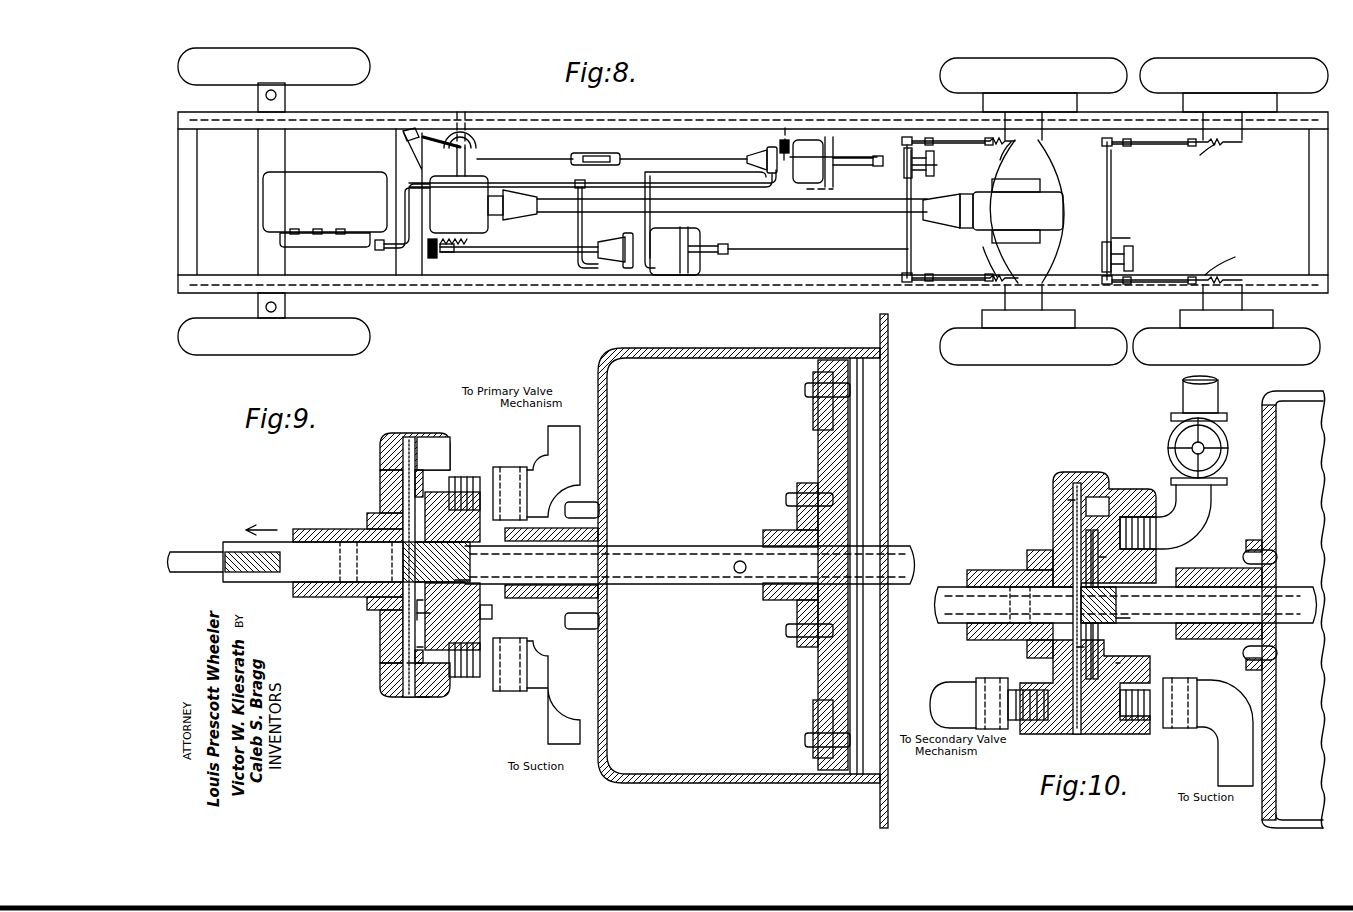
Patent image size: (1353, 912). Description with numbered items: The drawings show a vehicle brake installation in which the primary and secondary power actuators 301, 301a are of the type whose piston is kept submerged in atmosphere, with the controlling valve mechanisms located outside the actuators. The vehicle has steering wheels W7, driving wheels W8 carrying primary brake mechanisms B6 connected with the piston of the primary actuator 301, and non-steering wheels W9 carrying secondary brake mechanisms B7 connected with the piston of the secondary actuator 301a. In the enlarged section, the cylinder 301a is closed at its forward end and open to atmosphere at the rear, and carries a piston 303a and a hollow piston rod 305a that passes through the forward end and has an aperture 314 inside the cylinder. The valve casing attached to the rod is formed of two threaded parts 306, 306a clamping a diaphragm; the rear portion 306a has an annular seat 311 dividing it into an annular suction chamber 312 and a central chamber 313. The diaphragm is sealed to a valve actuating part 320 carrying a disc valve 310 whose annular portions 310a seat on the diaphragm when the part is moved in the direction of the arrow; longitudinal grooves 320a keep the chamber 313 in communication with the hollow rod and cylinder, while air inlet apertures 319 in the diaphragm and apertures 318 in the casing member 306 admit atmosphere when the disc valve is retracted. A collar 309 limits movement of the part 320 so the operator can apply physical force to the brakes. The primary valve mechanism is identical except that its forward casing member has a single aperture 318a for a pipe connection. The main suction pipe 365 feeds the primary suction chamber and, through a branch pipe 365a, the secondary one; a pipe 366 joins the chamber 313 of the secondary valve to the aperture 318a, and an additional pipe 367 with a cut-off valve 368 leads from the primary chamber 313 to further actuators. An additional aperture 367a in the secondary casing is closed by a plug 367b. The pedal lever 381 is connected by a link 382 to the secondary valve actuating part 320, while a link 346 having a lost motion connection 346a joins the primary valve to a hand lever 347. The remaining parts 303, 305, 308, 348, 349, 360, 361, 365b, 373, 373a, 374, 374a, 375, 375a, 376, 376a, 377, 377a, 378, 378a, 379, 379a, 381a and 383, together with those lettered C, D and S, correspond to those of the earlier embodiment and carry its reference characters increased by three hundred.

In FIG. 8, the primary power actuator 301 is at (806, 140).
In FIG. 10, the primary power actuator 301 is at (1286, 410).
In FIG. 8, the secondary power actuator 301a is at (671, 266).
In FIG. 9, the secondary power actuator 301a is at (742, 351).
In FIG. 8, the end plate 303 is at (834, 187).
In FIG. 9, the piston 303a is at (823, 459).
In FIG. 8, the piston rod 305 is at (853, 160).
In FIG. 10, the piston rod 305 is at (1289, 598).
In FIG. 8, the piston rod 305a is at (706, 253).
In FIG. 9, the piston rod 305a is at (649, 546).
In FIG. 9, the forward casing member 306 is at (392, 446).
In FIG. 10, the forward casing member 306 is at (1058, 481).
In FIG. 9, the rear portion of valve casing 306a is at (446, 443).
In FIG. 10, the rear portion of valve casing 306a is at (1111, 491).
In FIG. 9, the valve seat 308 is at (417, 647).
In FIG. 10, the valve seat 308 is at (1068, 500).
In FIG. 9, the collar 309 is at (417, 600).
In FIG. 10, the collar 309 is at (1093, 566).
In FIG. 9, the disc valve 310 is at (430, 613).
In FIG. 10, the disc valve 310 is at (1099, 557).
In FIG. 9, the annular portions 310a is at (416, 503).
In FIG. 10, the annular portions 310a is at (1084, 534).
In FIG. 9, the annular seat 311 is at (452, 470).
In FIG. 10, the annular seat 311 is at (1132, 517).
In FIG. 9, the annular suction chamber 312 is at (420, 662).
In FIG. 10, the annular suction chamber 312 is at (1090, 497).
In FIG. 9, the centrally located chamber 313 is at (407, 664).
In FIG. 10, the centrally located chamber 313 is at (1118, 664).
In FIG. 9, the aperture 314 is at (740, 575).
In FIG. 9, the apertures 318 is at (386, 636).
In FIG. 10, the single aperture 318a is at (1070, 705).
In FIG. 9, the air inlet apertures 319 is at (410, 527).
In FIG. 10, the air inlet apertures 319 is at (1077, 648).
In FIG. 8, the valve actuating part 320 is at (602, 254).
In FIG. 9, the valve actuating part 320 is at (292, 541).
In FIG. 10, the valve actuating part 320 is at (949, 605).
In FIG. 9, the longitudinal grooves 320a is at (456, 583).
In FIG. 10, the longitudinal grooves 320a is at (1130, 618).
In FIG. 8, the link 346 is at (540, 158).
In FIG. 8, the lost motion connection 346a is at (600, 150).
In FIG. 8, the hand lever 347 is at (445, 133).
In FIG. 8, the pedal 348 is at (412, 128).
In FIG. 8, the quadrant 349 is at (473, 140).
In FIG. 8, the vacuum tank 360 is at (325, 202).
In FIG. 8, the tray 361 is at (306, 246).
In FIG. 8, the main suction pipe 365 is at (747, 187).
In FIG. 10, the main suction pipe 365 is at (1224, 748).
In FIG. 8, the branch pipe 365a is at (581, 222).
In FIG. 9, the branch pipe 365a is at (548, 717).
In FIG. 8, the pipe connection 365b is at (376, 248).
In FIG. 8, the pipe 366 is at (650, 193).
In FIG. 9, the pipe 366 is at (558, 437).
In FIG. 10, the pipe 366 is at (947, 683).
In FIG. 8, the additional pipe 367 is at (785, 128).
In FIG. 10, the additional pipe 367 is at (1183, 392).
In FIG. 9, the additional aperture 367a is at (423, 698).
In FIG. 9, the plug 367b is at (492, 612).
In FIG. 8, the cut-off valve 368 is at (780, 143).
In FIG. 10, the cut-off valve 368 is at (1176, 440).
In FIG. 8, the flexible hose 373 is at (1023, 280).
In FIG. 8, the flexible hose 373a is at (1240, 280).
In FIG. 8, the rear axle 374 is at (1005, 300).
In FIG. 8, the rear axle 374a is at (1203, 298).
In FIG. 8, the brake connection 375 is at (983, 209).
In FIG. 8, the brake connection 375a is at (1232, 209).
In FIG. 8, the brake pipe 376 is at (960, 278).
In FIG. 8, the brake pipe 376a is at (1185, 278).
In FIG. 8, the pipe 377 is at (905, 268).
In FIG. 8, the pipe 377a is at (1105, 278).
In FIG. 8, the pipe 378 is at (907, 238).
In FIG. 8, the pipe 378a is at (1113, 195).
In FIG. 8, the valve 379 is at (1132, 240).
In FIG. 8, the valve 379a is at (1134, 250).
In FIG. 8, the pedal lever 381 is at (436, 255).
In FIG. 8, the spring 381a is at (470, 238).
In FIG. 8, the link 382 is at (518, 253).
In FIG. 9, the link 382 is at (192, 551).
In FIG. 8, the rod 383 is at (785, 250).
In FIG. 8, the chassis frame C is at (509, 292).
In FIG. 8, the differential D is at (993, 211).
In FIG. 8, the propeller shaft S is at (839, 211).
In FIG. 8, the steering wheels W7 is at (378, 333).
In FIG. 8, the driving wheels W8 is at (943, 365).
In FIG. 8, the non-steering wheels W9 is at (1272, 350).
In FIG. 8, the primary brake mechanisms B6 is at (982, 317).
In FIG. 8, the secondary brake mechanisms B7 is at (1180, 317).